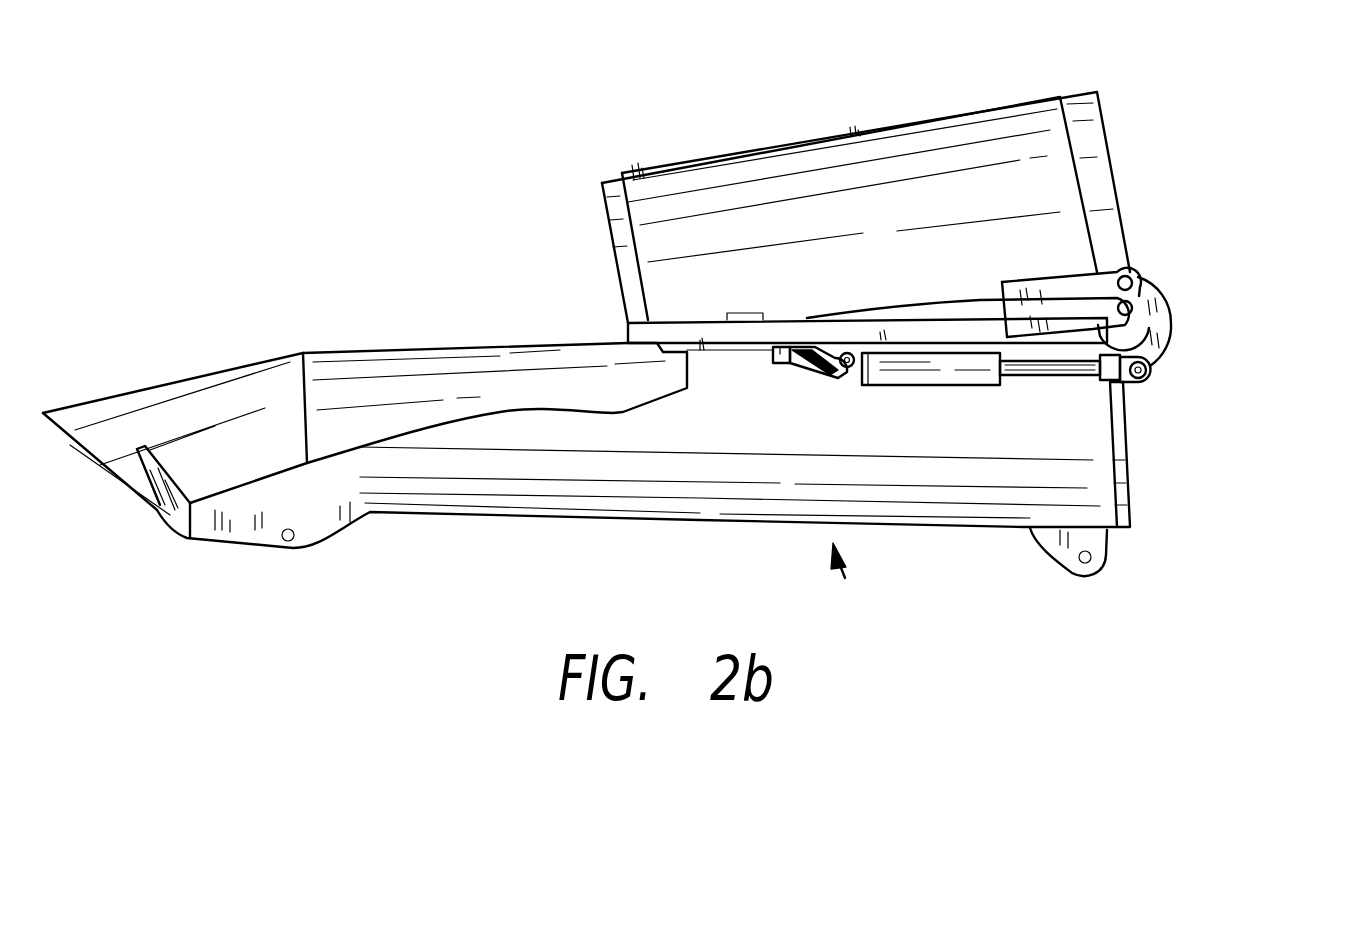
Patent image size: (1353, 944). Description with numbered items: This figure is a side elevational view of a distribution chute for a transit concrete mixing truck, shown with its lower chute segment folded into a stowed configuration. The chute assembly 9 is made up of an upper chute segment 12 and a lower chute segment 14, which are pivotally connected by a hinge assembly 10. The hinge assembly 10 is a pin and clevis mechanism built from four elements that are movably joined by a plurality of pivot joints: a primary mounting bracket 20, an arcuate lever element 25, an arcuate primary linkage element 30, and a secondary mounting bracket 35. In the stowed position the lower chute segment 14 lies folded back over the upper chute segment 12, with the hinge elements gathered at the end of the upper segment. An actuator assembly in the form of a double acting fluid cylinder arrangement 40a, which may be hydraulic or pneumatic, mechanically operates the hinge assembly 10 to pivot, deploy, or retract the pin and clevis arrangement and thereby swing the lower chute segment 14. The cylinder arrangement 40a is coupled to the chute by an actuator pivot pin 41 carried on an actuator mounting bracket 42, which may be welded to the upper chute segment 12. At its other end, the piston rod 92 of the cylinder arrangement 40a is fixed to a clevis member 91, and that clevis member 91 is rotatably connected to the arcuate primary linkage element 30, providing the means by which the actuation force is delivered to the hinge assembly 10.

The chute assembly 9 is at (843, 584).
The hinge assembly 10 is at (1222, 274).
The upper chute segment 12 is at (458, 494).
The lower chute segment 14 is at (817, 180).
The primary mounting bracket 20 is at (1065, 310).
The arcuate lever element 25 is at (1140, 347).
The arcuate primary linkage element 30 is at (1175, 330).
The secondary mounting bracket 35 is at (1050, 287).
The double acting fluid cylinder arrangement 40a is at (960, 385).
The actuator pivot pin 41 is at (843, 352).
The actuator mounting bracket 42 is at (813, 350).
The clevis member 91 is at (1122, 388).
The piston rod 92 is at (1047, 375).